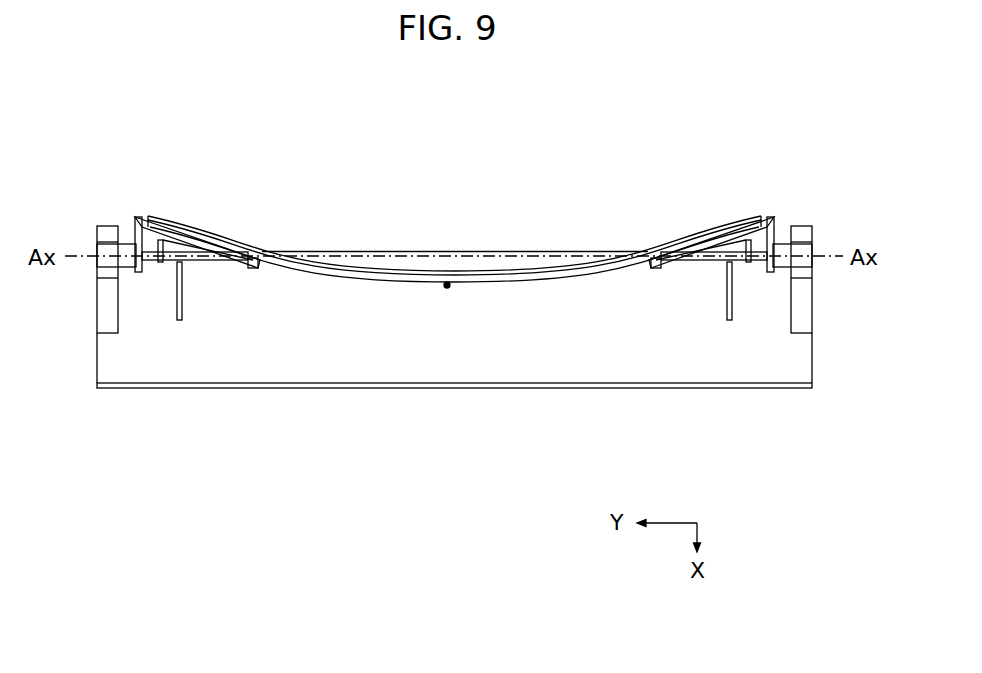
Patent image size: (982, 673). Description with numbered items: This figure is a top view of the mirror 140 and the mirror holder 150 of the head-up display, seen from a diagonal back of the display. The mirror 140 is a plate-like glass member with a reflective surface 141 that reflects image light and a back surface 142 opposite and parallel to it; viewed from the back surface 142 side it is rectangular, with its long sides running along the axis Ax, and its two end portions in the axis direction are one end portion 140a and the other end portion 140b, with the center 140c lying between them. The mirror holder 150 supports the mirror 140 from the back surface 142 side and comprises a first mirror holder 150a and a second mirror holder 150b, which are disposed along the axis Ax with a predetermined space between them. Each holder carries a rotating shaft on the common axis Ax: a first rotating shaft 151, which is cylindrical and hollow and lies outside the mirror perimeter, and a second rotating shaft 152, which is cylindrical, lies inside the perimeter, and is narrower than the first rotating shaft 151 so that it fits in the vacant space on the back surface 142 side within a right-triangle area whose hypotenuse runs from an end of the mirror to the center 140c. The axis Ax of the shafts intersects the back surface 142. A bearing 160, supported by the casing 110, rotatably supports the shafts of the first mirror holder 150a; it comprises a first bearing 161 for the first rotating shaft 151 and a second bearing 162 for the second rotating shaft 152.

The casing 110 is at (446, 384).
The mirror 140 is at (451, 277).
The one end portion 140a is at (745, 217).
The other end portion 140b is at (158, 217).
The center 140c is at (449, 287).
The reflective surface 141 is at (401, 269).
The back surface 142 is at (393, 282).
The mirror holder 150 is at (454, 359).
The first mirror holder 150a is at (653, 270).
The second mirror holder 150b is at (254, 270).
The first rotating shaft 151 is at (131, 244).
The second rotating shaft 152 is at (196, 240).
The bearing 160 is at (459, 344).
The first bearing 161 is at (108, 312).
The second bearing 162 is at (178, 322).